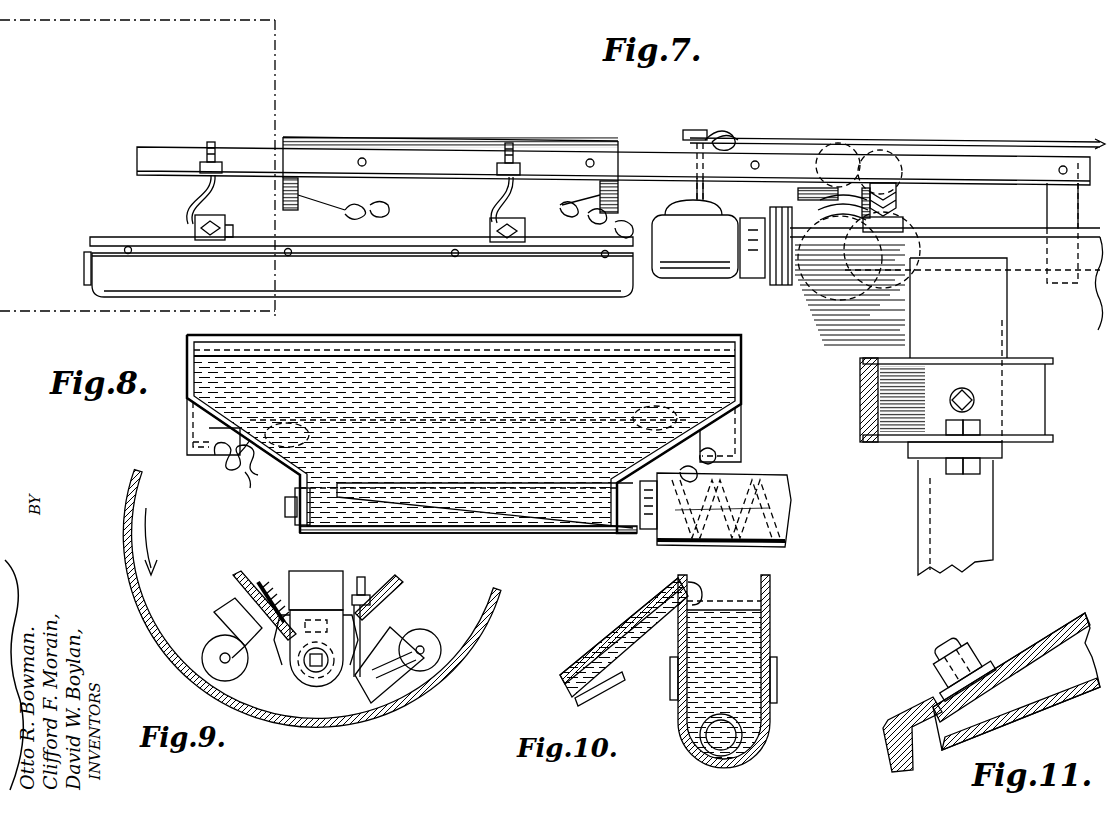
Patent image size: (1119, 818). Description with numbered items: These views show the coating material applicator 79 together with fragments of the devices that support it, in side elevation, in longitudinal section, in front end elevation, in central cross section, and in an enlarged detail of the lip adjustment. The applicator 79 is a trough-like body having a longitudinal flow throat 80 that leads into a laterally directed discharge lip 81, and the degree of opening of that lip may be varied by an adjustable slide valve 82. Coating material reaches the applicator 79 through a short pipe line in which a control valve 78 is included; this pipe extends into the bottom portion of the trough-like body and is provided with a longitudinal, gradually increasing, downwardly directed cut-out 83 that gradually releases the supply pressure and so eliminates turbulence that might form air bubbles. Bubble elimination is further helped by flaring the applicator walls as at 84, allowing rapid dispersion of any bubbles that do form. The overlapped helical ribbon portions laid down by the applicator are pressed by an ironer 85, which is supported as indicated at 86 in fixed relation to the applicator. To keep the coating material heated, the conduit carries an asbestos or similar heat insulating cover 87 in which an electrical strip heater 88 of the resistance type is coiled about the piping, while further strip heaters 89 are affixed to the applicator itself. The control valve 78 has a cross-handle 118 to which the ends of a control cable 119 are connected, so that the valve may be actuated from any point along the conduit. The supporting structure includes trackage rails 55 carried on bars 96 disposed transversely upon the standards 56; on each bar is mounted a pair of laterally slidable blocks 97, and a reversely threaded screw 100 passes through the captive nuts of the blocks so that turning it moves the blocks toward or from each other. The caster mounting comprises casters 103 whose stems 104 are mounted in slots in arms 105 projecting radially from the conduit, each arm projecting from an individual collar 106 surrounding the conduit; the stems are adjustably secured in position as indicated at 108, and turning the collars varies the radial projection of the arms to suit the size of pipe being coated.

In FIG. 7, the trackage rails 55 is at (1032, 412).
In FIG. 7, the standards 56 is at (990, 515).
In FIG. 7, the control valve 78 is at (690, 190).
In FIG. 7, the coating material applicator 79 is at (400, 148).
In FIG. 8, the coating material applicator 79 is at (702, 346).
In FIG. 9, the coating material applicator 79 is at (310, 575).
In FIG. 10, the coating material applicator 79 is at (768, 606).
In FIG. 8, the longitudinal flow throat 80 is at (645, 360).
In FIG. 10, the longitudinal flow throat 80 is at (683, 584).
In FIG. 8, the discharge lip 81 is at (187, 445).
In FIG. 9, the discharge lip 81 is at (228, 626).
In FIG. 10, the discharge lip 81 is at (600, 655).
In FIG. 11, the discharge lip 81 is at (1016, 712).
In FIG. 11, the adjustable slide valve 82 is at (885, 747).
In FIG. 8, the cut-out 83 is at (455, 512).
In FIG. 10, the cut-out 83 is at (703, 750).
In FIG. 7, the flared applicator walls 84 is at (330, 182).
In FIG. 8, the flared applicator walls 84 is at (198, 422).
In FIG. 7, the ironer 85 is at (448, 290).
In FIG. 9, the ironer 85 is at (392, 692).
In FIG. 7, the ironer support 86 is at (195, 200).
In FIG. 9, the ironer support 86 is at (376, 585).
In FIG. 8, the heat insulating cover 87 is at (775, 480).
In FIG. 8, the electrical strip heater 88 is at (780, 515).
In FIG. 7, the strip heaters 89 is at (285, 200).
In FIG. 8, the strip heaters 89 is at (236, 470).
In FIG. 9, the strip heaters 89 is at (276, 652).
In FIG. 10, the strip heaters 89 is at (670, 688).
In FIG. 7, the bars 96 is at (990, 452).
In FIG. 7, the laterally slidable blocks 97 is at (1008, 312).
In FIG. 7, the reversely threaded screw 100 is at (972, 397).
In FIG. 7, the casters 103 is at (845, 290).
In FIG. 9, the casters 103 is at (215, 672).
In FIG. 7, the caster stems 104 is at (885, 168).
In FIG. 7, the arms 105 is at (845, 185).
In FIG. 9, the arms 105 is at (233, 578).
In FIG. 7, the collar 106 is at (910, 262).
In FIG. 7, the stem securing means 108 is at (905, 216).
In FIG. 9, the stem securing means 108 is at (262, 585).
In FIG. 7, the cross-handle 118 is at (690, 135).
In FIG. 7, the control cable 119 is at (766, 140).